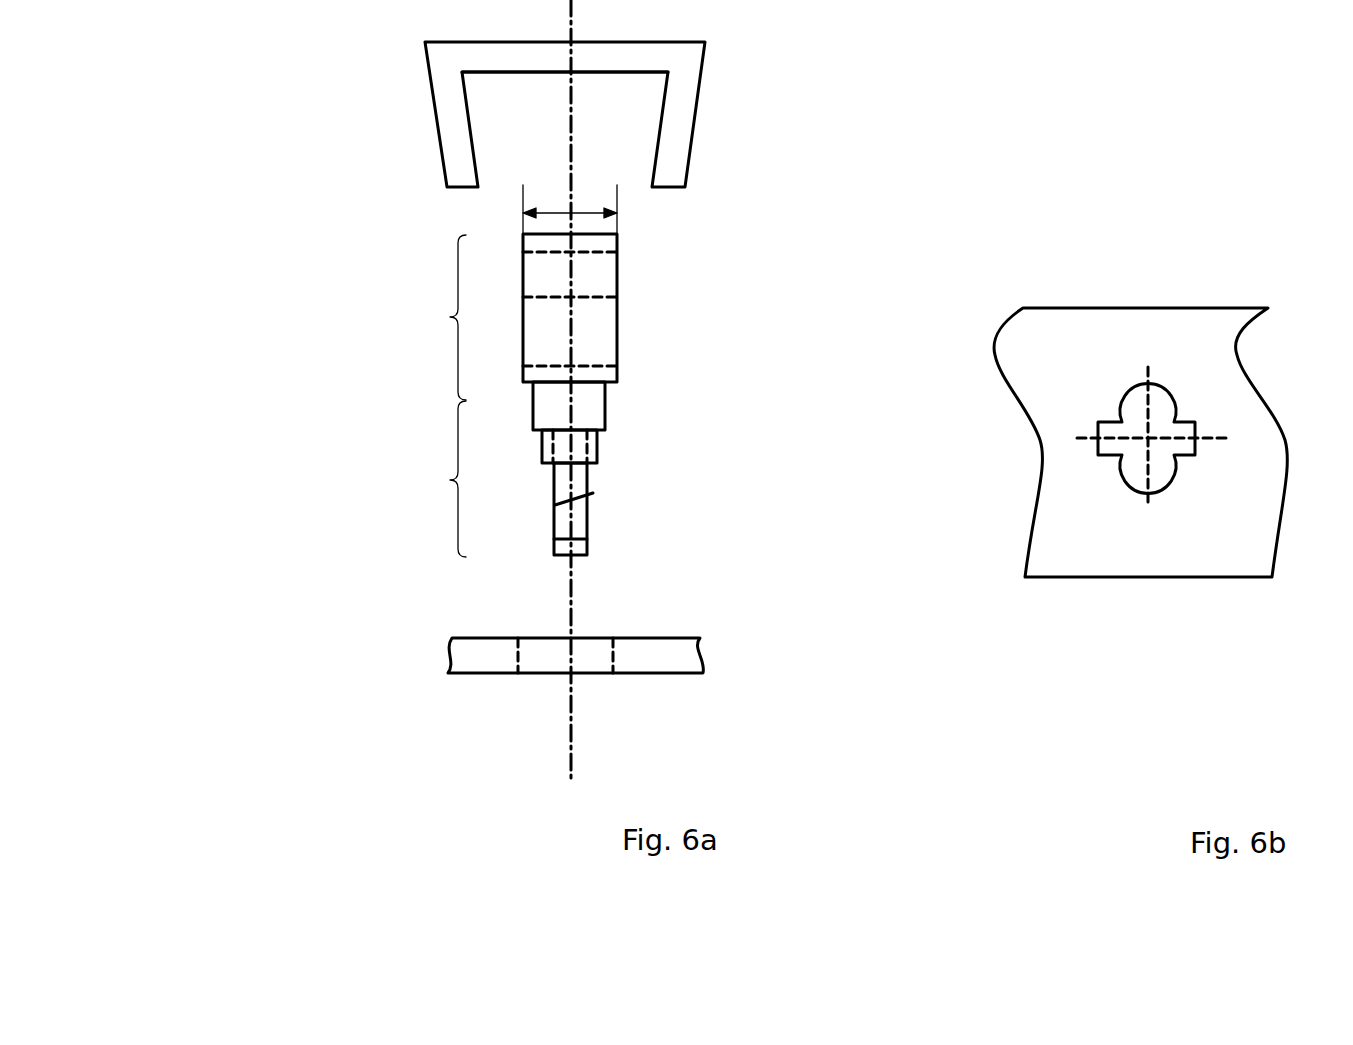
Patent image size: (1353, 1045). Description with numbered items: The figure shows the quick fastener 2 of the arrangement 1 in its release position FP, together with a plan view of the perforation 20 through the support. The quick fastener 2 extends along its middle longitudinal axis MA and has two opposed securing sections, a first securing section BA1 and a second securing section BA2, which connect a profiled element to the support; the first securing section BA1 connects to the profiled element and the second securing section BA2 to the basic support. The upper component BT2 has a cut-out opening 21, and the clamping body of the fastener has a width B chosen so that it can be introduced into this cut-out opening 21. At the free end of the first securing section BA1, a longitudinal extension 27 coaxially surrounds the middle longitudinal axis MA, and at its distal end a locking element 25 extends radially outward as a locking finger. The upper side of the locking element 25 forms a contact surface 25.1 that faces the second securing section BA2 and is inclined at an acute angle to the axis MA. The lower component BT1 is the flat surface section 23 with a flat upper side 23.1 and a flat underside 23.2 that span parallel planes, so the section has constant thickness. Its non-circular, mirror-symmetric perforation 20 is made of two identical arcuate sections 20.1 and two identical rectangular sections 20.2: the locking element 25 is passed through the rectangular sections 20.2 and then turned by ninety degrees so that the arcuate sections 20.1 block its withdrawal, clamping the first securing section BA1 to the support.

In FIG. 6A, the arrangement 1 is at (323, 132).
In FIG. 6A, the quick fastener 2 is at (583, 337).
In FIG. 6A, the cut-out opening 21 is at (517, 132).
In FIG. 6A, the locking element 25 is at (580, 528).
In FIG. 6A, the contact surface 25.1 is at (582, 492).
In FIG. 6A, the longitudinal extension 27 is at (553, 547).
In FIG. 6A, the perforation 20 is at (546, 684).
In FIG. 6B, the perforation 20 is at (1105, 481).
In FIG. 6B, the arcuate sections 20.1 is at (1165, 390).
In FIG. 6B, the rectangular sections 20.2 is at (1210, 425).
In FIG. 6A, the flat surface section 23 is at (619, 700).
In FIG. 6B, the flat surface section 23 is at (1144, 548).
In FIG. 6A, the flat upper side 23.1 is at (690, 631).
In FIG. 6A, the flat underside 23.2 is at (664, 688).
In FIG. 6A, the width B is at (570, 202).
In FIG. 6A, the first securing section BA1 is at (450, 480).
In FIG. 6A, the second securing section BA2 is at (450, 316).
In FIG. 6A, the first component (plate) BT1 is at (503, 653).
In FIG. 6B, the first component (plate) BT1 is at (1037, 553).
In FIG. 6A, the second component (upper tool) BT2 is at (715, 123).
In FIG. 6A, the release position FP is at (290, 422).
In FIG. 6A, the middle longitudinal axis MA is at (575, 410).
In FIG. 6B, the middle longitudinal axis MA is at (1156, 452).